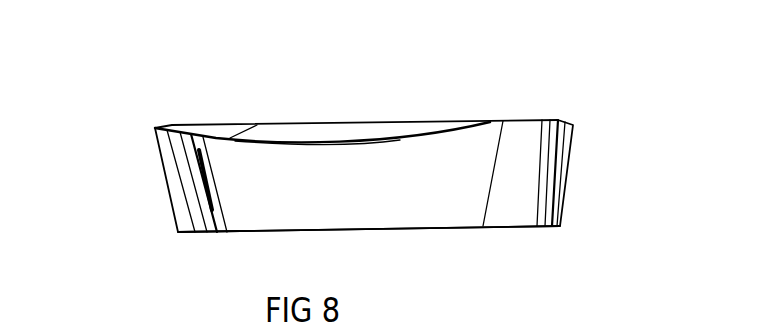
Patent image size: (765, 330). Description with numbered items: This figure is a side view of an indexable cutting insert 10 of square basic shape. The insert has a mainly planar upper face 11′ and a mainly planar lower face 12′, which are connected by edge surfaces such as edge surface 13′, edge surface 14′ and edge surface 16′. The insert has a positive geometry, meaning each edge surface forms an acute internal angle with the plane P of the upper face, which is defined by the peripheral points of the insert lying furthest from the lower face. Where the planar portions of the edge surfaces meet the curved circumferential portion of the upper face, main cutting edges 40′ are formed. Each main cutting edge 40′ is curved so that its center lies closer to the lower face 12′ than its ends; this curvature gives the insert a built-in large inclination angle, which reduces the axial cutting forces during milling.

The indexable cutting insert 10 is at (586, 85).
The upper face 11′ is at (289, 59).
The lower face 12′ is at (447, 228).
The edge surface 13′ is at (292, 189).
The edge surface 14′ is at (631, 176).
The edge surface 16′ is at (167, 184).
The main cutting edge 40′ is at (380, 145).
The plane of the upper face P is at (503, 120).